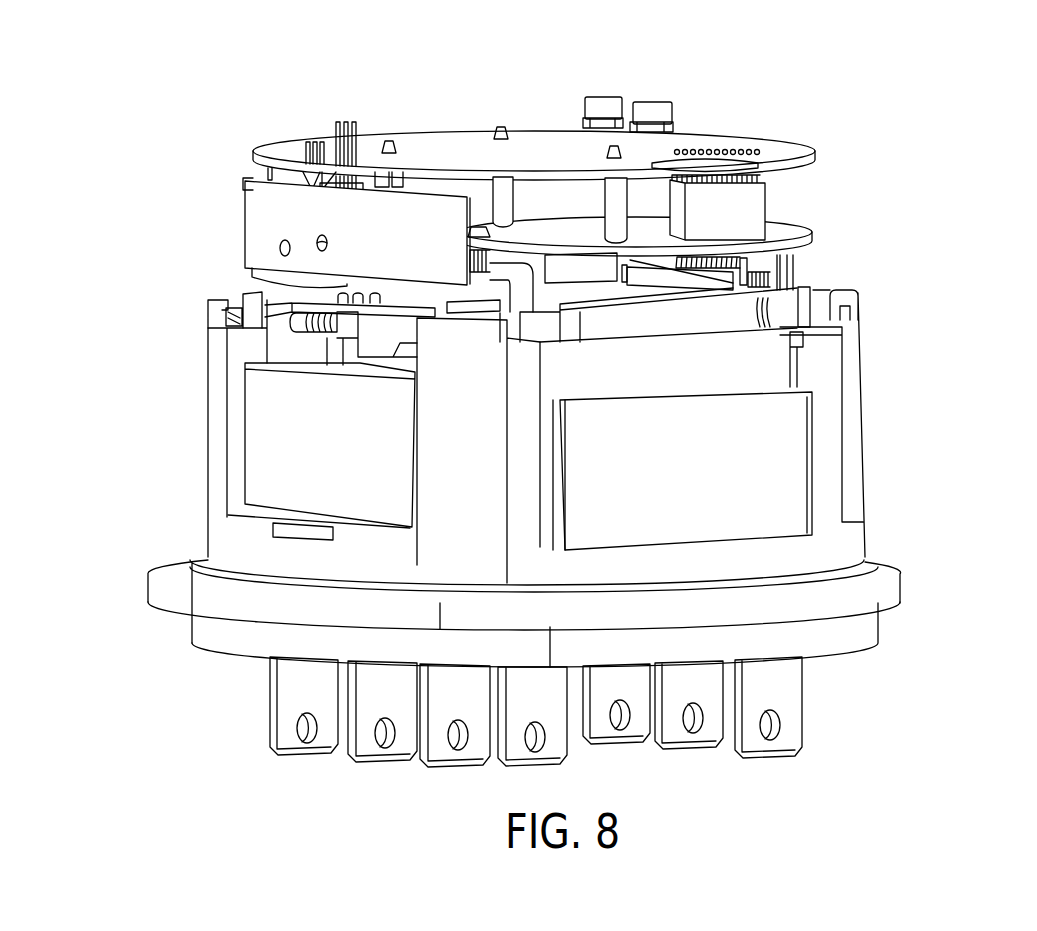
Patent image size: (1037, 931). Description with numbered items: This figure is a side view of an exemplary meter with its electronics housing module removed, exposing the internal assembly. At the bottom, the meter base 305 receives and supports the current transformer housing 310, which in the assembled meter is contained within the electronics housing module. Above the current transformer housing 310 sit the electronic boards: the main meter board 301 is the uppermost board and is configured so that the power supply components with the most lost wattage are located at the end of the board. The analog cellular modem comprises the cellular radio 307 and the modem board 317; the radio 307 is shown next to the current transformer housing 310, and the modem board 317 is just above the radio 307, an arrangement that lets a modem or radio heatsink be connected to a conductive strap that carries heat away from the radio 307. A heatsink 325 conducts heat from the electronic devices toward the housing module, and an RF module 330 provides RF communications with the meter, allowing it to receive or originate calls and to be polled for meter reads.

The main meter board 301 is at (435, 142).
The modem board 317 is at (812, 232).
The cellular radio 307 is at (743, 270).
The heatsink 325 is at (245, 227).
The RF module 330 is at (347, 330).
The current transformer housing 310 is at (863, 427).
The meter base 305 is at (900, 583).